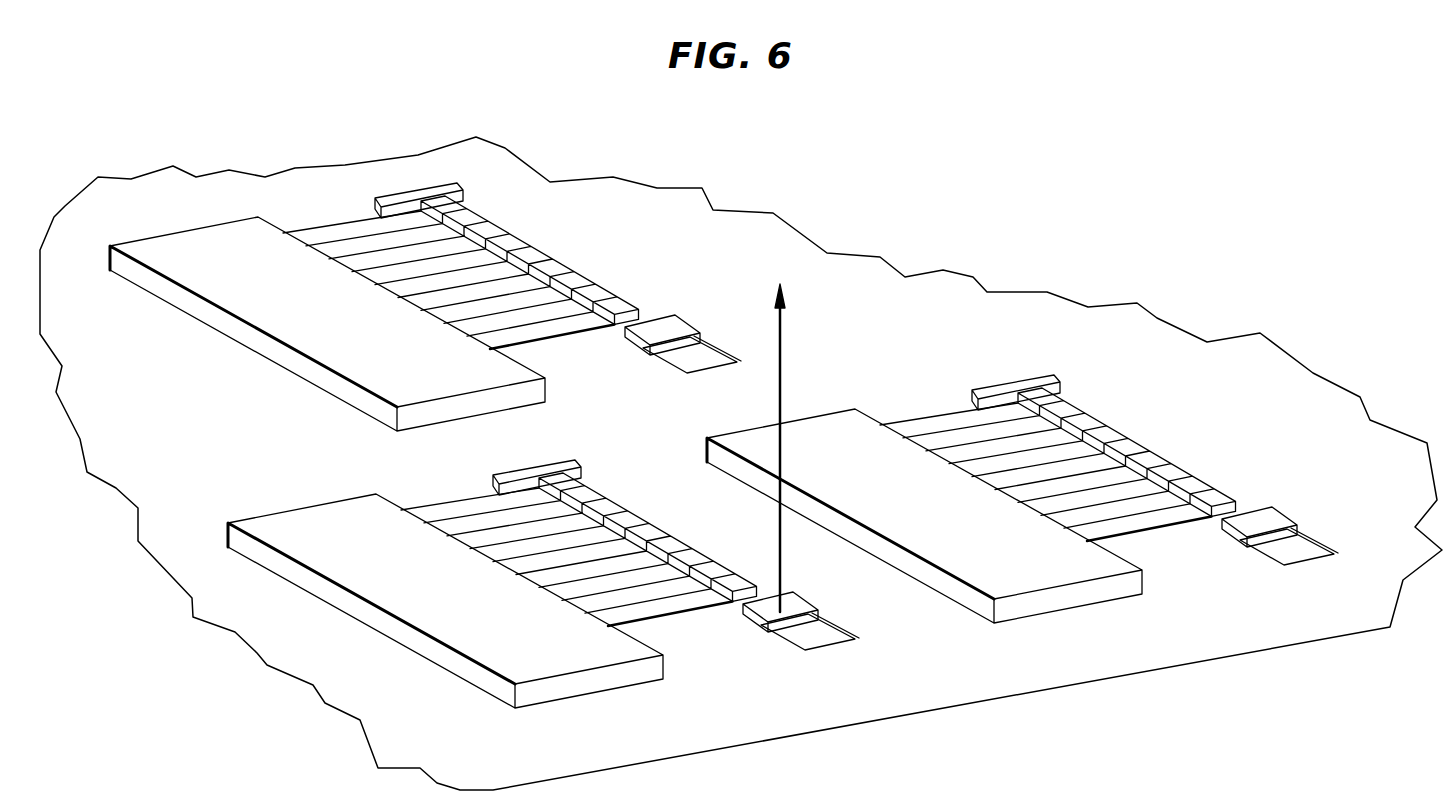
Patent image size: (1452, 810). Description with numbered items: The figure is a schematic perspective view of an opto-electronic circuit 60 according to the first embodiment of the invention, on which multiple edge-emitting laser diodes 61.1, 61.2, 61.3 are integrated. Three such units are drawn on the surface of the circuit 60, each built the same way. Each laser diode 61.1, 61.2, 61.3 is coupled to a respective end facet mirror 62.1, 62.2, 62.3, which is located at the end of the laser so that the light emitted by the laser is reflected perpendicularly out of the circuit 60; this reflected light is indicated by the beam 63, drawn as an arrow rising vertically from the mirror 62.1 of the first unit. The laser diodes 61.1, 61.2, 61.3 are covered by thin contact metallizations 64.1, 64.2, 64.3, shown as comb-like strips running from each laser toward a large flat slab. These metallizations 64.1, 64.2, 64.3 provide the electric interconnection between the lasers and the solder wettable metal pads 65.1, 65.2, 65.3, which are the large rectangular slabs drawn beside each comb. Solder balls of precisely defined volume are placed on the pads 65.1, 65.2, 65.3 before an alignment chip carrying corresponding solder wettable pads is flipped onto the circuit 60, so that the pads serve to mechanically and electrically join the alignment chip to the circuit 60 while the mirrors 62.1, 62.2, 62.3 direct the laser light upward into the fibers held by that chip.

The opto-electronic circuit 60 is at (1048, 234).
The edge-emitting laser diode 61.1 is at (763, 592).
The edge-emitting laser diode 61.2 is at (1233, 512).
The edge-emitting laser diode 61.3 is at (645, 318).
The end facet mirror 62.1 is at (812, 612).
The end facet mirror 62.2 is at (1266, 522).
The end facet mirror 62.3 is at (620, 352).
The beam 63 is at (786, 345).
The contact metallization 64.1 is at (662, 607).
The contact metallization 64.2 is at (1143, 518).
The contact metallization 64.3 is at (384, 258).
The solder wettable metal pad 65.1 is at (617, 676).
The solder wettable metal pad 65.2 is at (1090, 597).
The solder wettable metal pad 65.3 is at (327, 380).